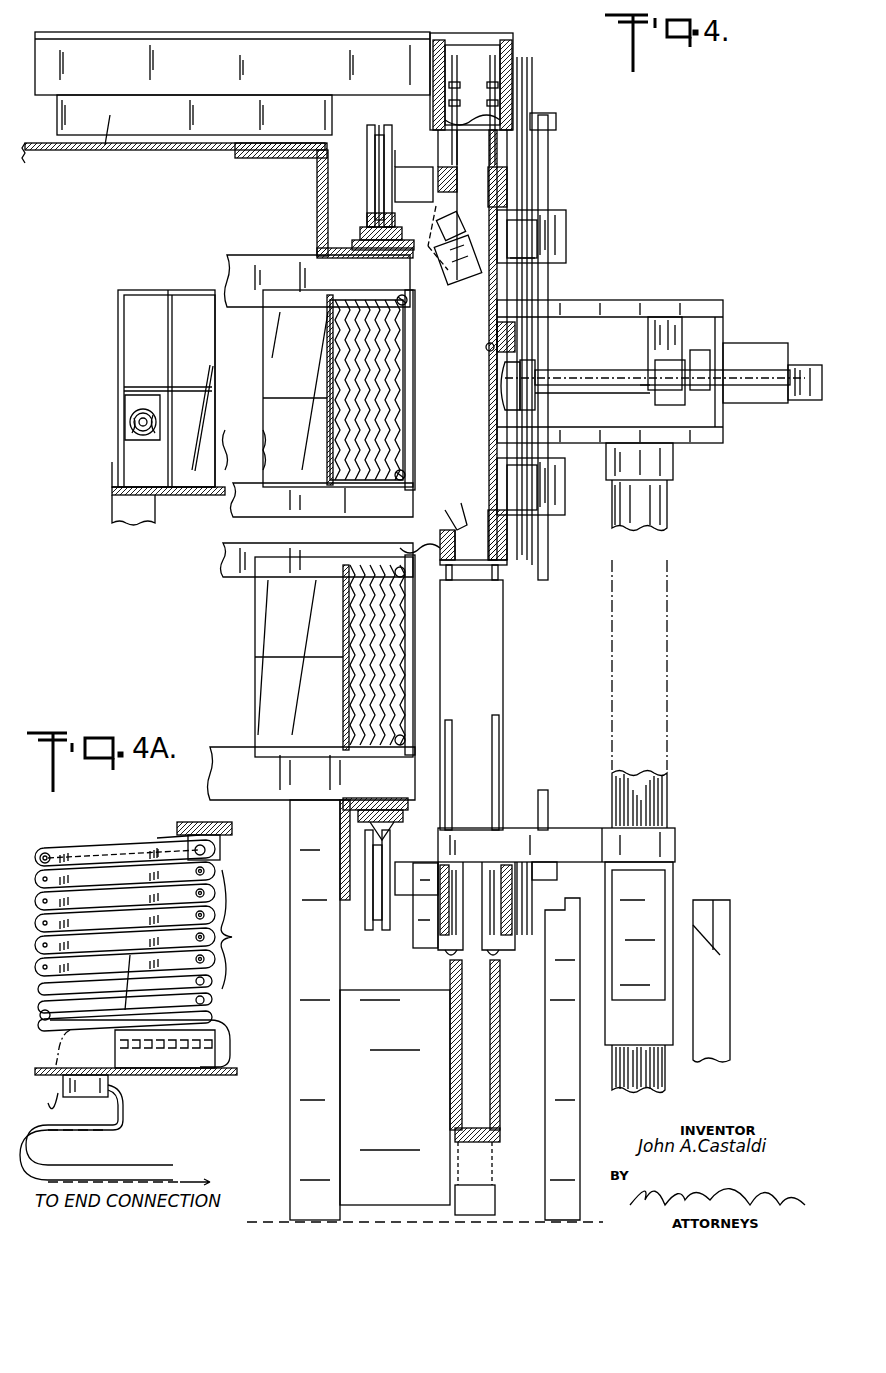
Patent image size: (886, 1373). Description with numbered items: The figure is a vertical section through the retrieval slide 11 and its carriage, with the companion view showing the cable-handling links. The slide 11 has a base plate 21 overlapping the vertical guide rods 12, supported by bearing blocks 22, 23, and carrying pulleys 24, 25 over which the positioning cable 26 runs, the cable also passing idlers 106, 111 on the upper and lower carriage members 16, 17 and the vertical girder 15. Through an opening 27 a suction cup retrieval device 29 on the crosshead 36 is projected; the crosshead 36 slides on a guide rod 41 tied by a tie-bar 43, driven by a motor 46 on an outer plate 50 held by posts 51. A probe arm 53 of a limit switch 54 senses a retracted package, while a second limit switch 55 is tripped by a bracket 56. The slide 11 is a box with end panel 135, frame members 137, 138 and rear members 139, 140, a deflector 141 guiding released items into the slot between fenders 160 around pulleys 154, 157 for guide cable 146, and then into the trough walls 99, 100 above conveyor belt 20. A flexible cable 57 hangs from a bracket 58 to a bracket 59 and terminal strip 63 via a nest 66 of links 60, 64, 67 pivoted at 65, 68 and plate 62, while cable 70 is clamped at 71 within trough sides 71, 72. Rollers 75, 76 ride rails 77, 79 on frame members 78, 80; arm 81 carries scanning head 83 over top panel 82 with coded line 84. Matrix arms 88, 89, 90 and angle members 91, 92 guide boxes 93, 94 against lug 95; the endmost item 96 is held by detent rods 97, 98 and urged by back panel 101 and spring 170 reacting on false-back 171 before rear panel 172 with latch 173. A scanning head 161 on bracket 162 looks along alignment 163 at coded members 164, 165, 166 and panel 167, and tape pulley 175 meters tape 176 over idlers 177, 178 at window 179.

In FIG. 4, the slide 11 is at (498, 573).
In FIG. 4, the guide rods 12 is at (553, 272).
In FIG. 4, the vertical frame member 15 is at (497, 137).
In FIG. 4, the upper connecting frame member 16 is at (483, 36).
In FIG. 4, the lower connecting frame member 17 is at (415, 942).
In FIG. 4, the package-removal conveyor belt 20 is at (482, 1117).
In FIG. 4, the base plate 21 is at (497, 438).
In FIG. 4, the bearing block 22 is at (560, 238).
In FIG. 4, the bearing block 23 is at (548, 474).
In FIG. 4, the pulley 24 is at (536, 226).
In FIG. 4, the pulley 25 is at (535, 502).
In FIG. 4, the cable 26 is at (533, 152).
In FIG. 4, the opening 27 is at (489, 382).
In FIG. 4, the retrieval device 29 is at (518, 370).
In FIG. 4, the crosshead 36 is at (651, 362).
In FIG. 4, the guide rod 41 is at (640, 397).
In FIG. 4, the tie-bar 43 is at (818, 377).
In FIG. 4, the reversible electric motor 46 is at (755, 355).
In FIG. 4, the outer plate 50 is at (723, 308).
In FIG. 4, the offsetting posts 51 is at (645, 300).
In FIG. 4A, the offsetting posts 51 is at (182, 822).
In FIG. 4, the probe arm 53 is at (486, 349).
In FIG. 4, the limit switch 54 is at (520, 350).
In FIG. 4, the second limit switch 55 is at (713, 301).
In FIG. 4, the bracket 56 is at (648, 330).
In FIG. 4, the multiple-conductor flexible cable 57 is at (670, 511).
In FIG. 4A, the multiple-conductor flexible cable 57 is at (147, 848).
In FIG. 4, the bracket 58 is at (673, 465).
In FIG. 4A, the bracket 58 is at (220, 843).
In FIG. 4, the offsetting bracket 59 is at (570, 835).
In FIG. 4A, the offsetting bracket 59 is at (175, 1075).
In FIG. 4A, the bottom link 60 is at (78, 1022).
In FIG. 4A, the connecting plate 62 is at (226, 1034).
In FIG. 4A, the terminal strip 63 is at (153, 1063).
In FIG. 4A, the link 64 is at (131, 960).
In FIG. 4A, the pivot 65 is at (50, 1022).
In FIG. 4A, the nest 66 is at (144, 935).
In FIG. 4A, the uppermost link 67 is at (85, 855).
In FIG. 4A, the pivot 68 is at (206, 857).
In FIG. 4, the multiple-conductor cable 70 is at (640, 1060).
In FIG. 4A, the multiple-conductor cable 70 is at (97, 1150).
In FIG. 4, the clamp / trough side 71 is at (560, 987).
In FIG. 4A, the clamp / trough side 71 is at (93, 1092).
In FIG. 4, the trough side 72 is at (702, 955).
In FIG. 4, the support roller 75 is at (367, 144).
In FIG. 4, the guide roller 76 is at (365, 913).
In FIG. 4, the rail 77 is at (372, 203).
In FIG. 4, the upper frame member 78 is at (317, 180).
In FIG. 4, the rail 79 is at (350, 845).
In FIG. 4, the lower matrix frame member 80 is at (378, 798).
In FIG. 4, the upper arm 81 is at (226, 68).
In FIG. 4, the top panel 82 is at (55, 150).
In FIG. 4, the scanning head 83 is at (172, 121).
In FIG. 4, the coded element 84 is at (112, 128).
In FIG. 4, the laterally extending arm 88 is at (223, 548).
In FIG. 4, the laterally extending arm 89 is at (233, 497).
In FIG. 4, the laterally extending arm 90 is at (238, 302).
In FIG. 4, the angle member 91 is at (240, 760).
In FIG. 4, the angle member 92 is at (242, 497).
In FIG. 4, the storage box 93 is at (250, 689).
In FIG. 4, the box or drawer 94 is at (270, 439).
In FIG. 4, the upstanding lug 95 is at (470, 452).
In FIG. 4, the stored item 96 is at (395, 415).
In FIG. 4, the detent rod 97 is at (424, 325).
In FIG. 4, the detent rod 98 is at (470, 473).
In FIG. 4, the upstanding side 99 is at (450, 1030).
In FIG. 4, the upstanding side 100 is at (496, 1043).
In FIG. 4, the back panel 101 is at (327, 353).
In FIG. 4, the idler 106 is at (530, 68).
In FIG. 4, the idler 111 is at (539, 900).
In FIG. 4, the end panel 135 is at (481, 636).
In FIG. 4, the upper frame member 137 is at (480, 158).
In FIG. 4, the lower frame member 138 is at (480, 537).
In FIG. 4, the rear frame member 139 is at (433, 178).
In FIG. 4, the rear frame member 140 is at (440, 544).
In FIG. 4, the deflector member 141 is at (469, 507).
In FIG. 4, the guide cable 146 is at (478, 565).
In FIG. 4, the pulley 154 is at (450, 950).
In FIG. 4, the pulley 157 is at (473, 110).
In FIG. 4, the fender 160 is at (455, 855).
In FIG. 4, the scanning head 161 is at (462, 278).
In FIG. 4, the bracket 162 is at (460, 221).
In FIG. 4, the alignment 163 is at (426, 228).
In FIG. 4, the angle member 164 is at (410, 264).
In FIG. 4, the angle member 165 is at (410, 503).
In FIG. 4, the angle member 166 is at (388, 540).
In FIG. 4, the coded panel 167 is at (409, 302).
In FIG. 4, the coiled spring 170 is at (262, 358).
In FIG. 4, the false-back panel 171 is at (162, 308).
In FIG. 4, the rear panel 172 is at (120, 317).
In FIG. 4, the latch 173 is at (118, 497).
In FIG. 4, the tape pulley 175 is at (122, 425).
In FIG. 4, the tape 176 is at (180, 385).
In FIG. 4, the idler 177 is at (124, 458).
In FIG. 4, the idler 178 is at (140, 383).
In FIG. 4, the window 179 is at (124, 395).